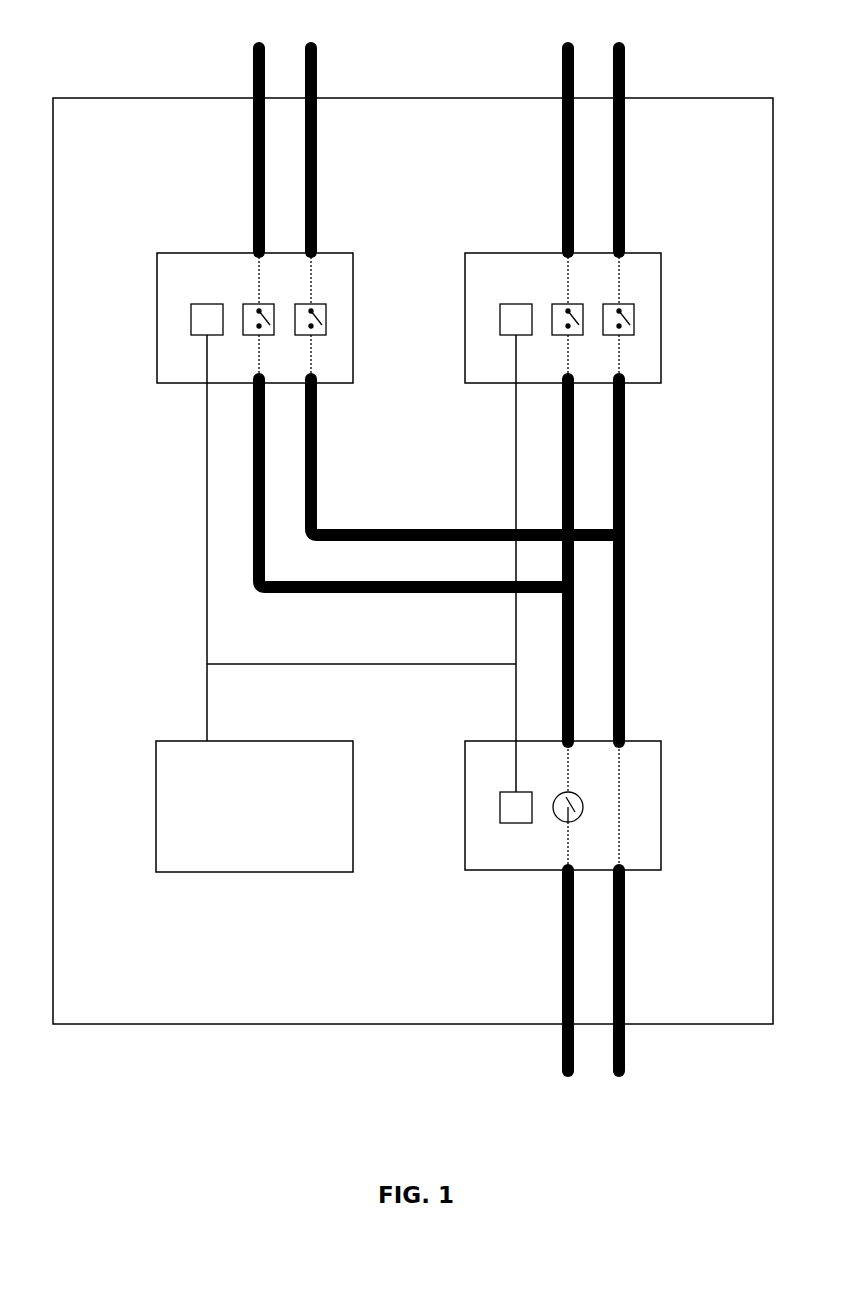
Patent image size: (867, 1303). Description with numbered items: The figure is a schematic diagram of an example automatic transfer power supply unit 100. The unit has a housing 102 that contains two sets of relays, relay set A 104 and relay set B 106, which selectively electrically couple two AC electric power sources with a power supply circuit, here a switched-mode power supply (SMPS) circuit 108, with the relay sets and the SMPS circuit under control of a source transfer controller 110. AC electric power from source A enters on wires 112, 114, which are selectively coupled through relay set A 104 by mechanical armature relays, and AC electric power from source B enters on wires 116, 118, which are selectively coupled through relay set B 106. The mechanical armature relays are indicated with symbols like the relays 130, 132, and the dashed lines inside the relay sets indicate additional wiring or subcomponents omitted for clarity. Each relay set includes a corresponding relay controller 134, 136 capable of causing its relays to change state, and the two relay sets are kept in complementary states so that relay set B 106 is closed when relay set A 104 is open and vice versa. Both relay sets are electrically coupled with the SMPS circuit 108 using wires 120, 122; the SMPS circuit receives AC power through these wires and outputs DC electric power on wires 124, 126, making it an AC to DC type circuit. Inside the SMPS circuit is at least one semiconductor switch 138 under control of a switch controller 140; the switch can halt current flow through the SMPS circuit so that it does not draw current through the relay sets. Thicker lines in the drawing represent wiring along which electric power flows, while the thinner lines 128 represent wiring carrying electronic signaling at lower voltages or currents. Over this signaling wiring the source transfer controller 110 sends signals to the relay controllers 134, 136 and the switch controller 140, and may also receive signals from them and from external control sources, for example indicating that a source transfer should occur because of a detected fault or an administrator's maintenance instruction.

The automatic transfer power supply unit 100 is at (197, 1132).
The housing 102 is at (413, 561).
The relay set A 104 is at (570, 325).
The relay set B 106 is at (257, 318).
The switched-mode power supply (SMPS) circuit 108 is at (571, 796).
The source transfer controller 110 is at (254, 806).
The wire from source A 112 is at (558, 128).
The wire from source A 114 is at (627, 128).
The wire from source B 116 is at (252, 128).
The wire from source B 118 is at (318, 128).
The wire coupling relay sets to SMPS circuit 120 is at (575, 695).
The wire coupling relay sets to SMPS circuit 122 is at (627, 593).
The DC output wire 124 is at (562, 1051).
The DC output wire 126 is at (623, 1051).
The signaling wiring 128 is at (205, 537).
The mechanical armature relay 130 is at (637, 321).
The mechanical armature relay 132 is at (328, 317).
The relay controller 134 is at (498, 321).
The relay controller 136 is at (188, 321).
The semiconductor switch 138 is at (585, 807).
The switch controller 140 is at (498, 808).